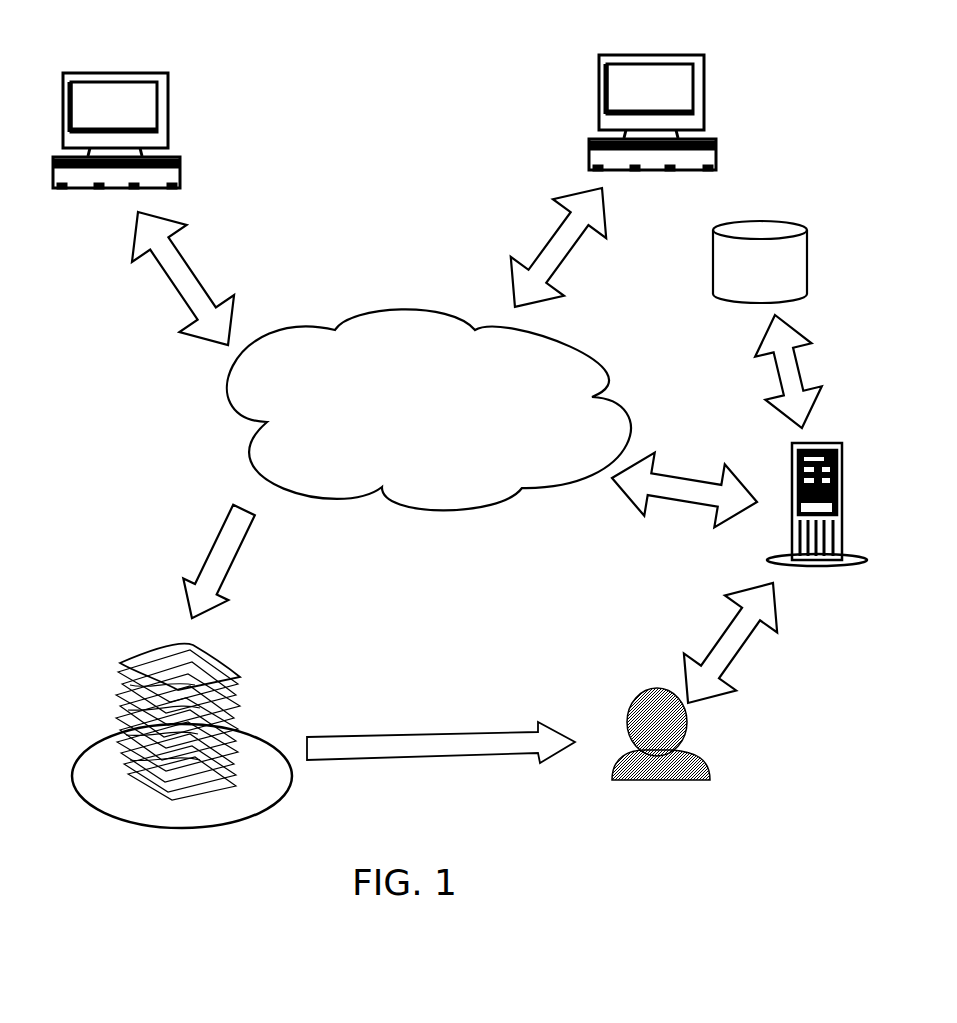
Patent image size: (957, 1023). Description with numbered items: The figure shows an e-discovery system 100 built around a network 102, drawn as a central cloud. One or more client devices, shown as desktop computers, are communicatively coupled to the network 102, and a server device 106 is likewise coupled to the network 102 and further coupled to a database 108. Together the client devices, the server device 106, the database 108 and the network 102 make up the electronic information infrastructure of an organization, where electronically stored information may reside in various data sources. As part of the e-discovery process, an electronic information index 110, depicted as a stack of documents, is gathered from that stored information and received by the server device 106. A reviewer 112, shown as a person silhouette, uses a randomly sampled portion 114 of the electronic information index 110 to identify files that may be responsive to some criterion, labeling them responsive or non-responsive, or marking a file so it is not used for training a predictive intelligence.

The system 100 is at (401, 31).
The network 102 is at (367, 318).
The server device 106 is at (812, 563).
The database 108 is at (745, 220).
The electronic information index 110 is at (222, 663).
The reviewer 112 is at (710, 768).
The randomly sampled portion 114 is at (257, 728).